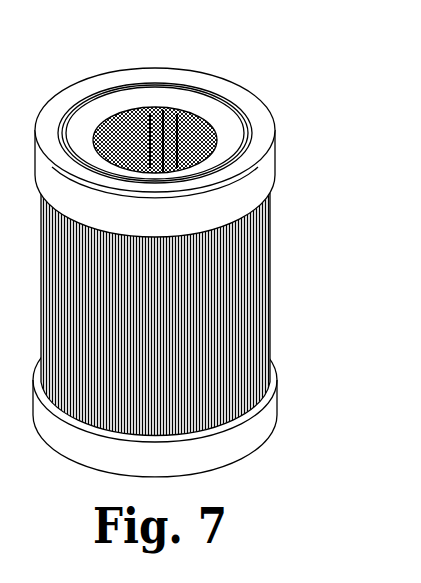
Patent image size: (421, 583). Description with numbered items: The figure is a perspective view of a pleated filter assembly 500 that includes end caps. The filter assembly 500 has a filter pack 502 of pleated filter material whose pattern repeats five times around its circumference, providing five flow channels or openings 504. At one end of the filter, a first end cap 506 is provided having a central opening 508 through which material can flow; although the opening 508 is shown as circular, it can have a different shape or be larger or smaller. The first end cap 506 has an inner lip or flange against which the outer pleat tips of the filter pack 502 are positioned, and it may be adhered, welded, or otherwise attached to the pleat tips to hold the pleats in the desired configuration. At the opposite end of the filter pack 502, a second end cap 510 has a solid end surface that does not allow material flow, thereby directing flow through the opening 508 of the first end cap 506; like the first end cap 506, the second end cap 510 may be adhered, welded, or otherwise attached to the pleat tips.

The filter assembly 500 is at (190, 252).
The filter pack 502 is at (272, 266).
The flow channels or openings 504 is at (219, 133).
The first end cap 506 is at (262, 181).
The central opening 508 is at (162, 136).
The second end cap 510 is at (244, 438).